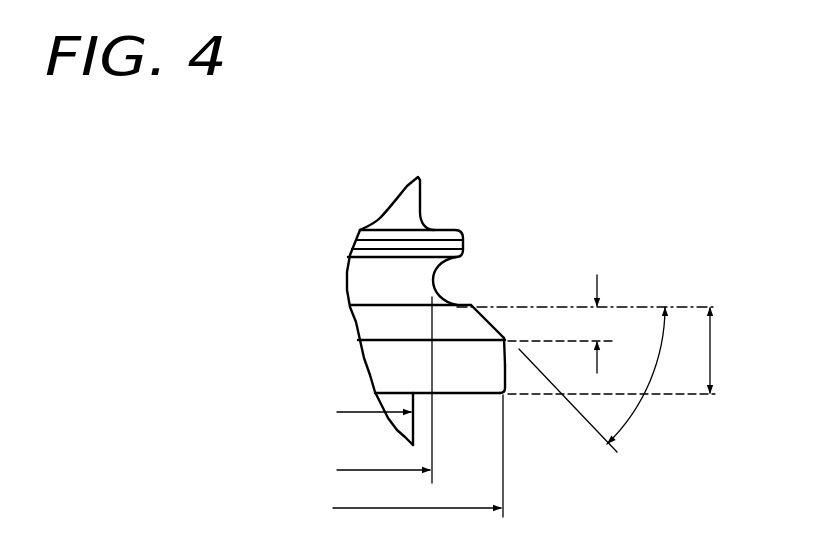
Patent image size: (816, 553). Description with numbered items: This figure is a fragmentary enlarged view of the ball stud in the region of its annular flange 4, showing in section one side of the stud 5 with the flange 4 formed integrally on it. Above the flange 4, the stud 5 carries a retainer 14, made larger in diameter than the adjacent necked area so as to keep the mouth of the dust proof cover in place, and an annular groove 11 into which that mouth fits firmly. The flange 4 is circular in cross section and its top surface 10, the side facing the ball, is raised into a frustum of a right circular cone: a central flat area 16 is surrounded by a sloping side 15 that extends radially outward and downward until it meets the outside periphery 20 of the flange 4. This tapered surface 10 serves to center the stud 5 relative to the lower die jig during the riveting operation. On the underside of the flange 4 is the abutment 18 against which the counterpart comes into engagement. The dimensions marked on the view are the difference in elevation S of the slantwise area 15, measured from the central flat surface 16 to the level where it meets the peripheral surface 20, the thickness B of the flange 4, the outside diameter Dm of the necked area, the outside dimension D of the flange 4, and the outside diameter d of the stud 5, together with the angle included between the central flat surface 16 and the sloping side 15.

The annular flange 4 is at (383, 368).
The stud 5 is at (405, 210).
The tapered surface 10 is at (505, 325).
The annular groove 11 is at (370, 277).
The retainer 14 is at (438, 243).
The sloping side 15 is at (477, 327).
The central flat area 16 is at (460, 300).
The abutment 18 is at (470, 395).
The outside periphery 20 is at (507, 363).
The difference in elevation S is at (607, 324).
The flange thickness B is at (721, 350).
The stud outside diameter d is at (362, 411).
The necked area outside diameter Dm is at (359, 391).
The flange outside dimension D is at (406, 460).